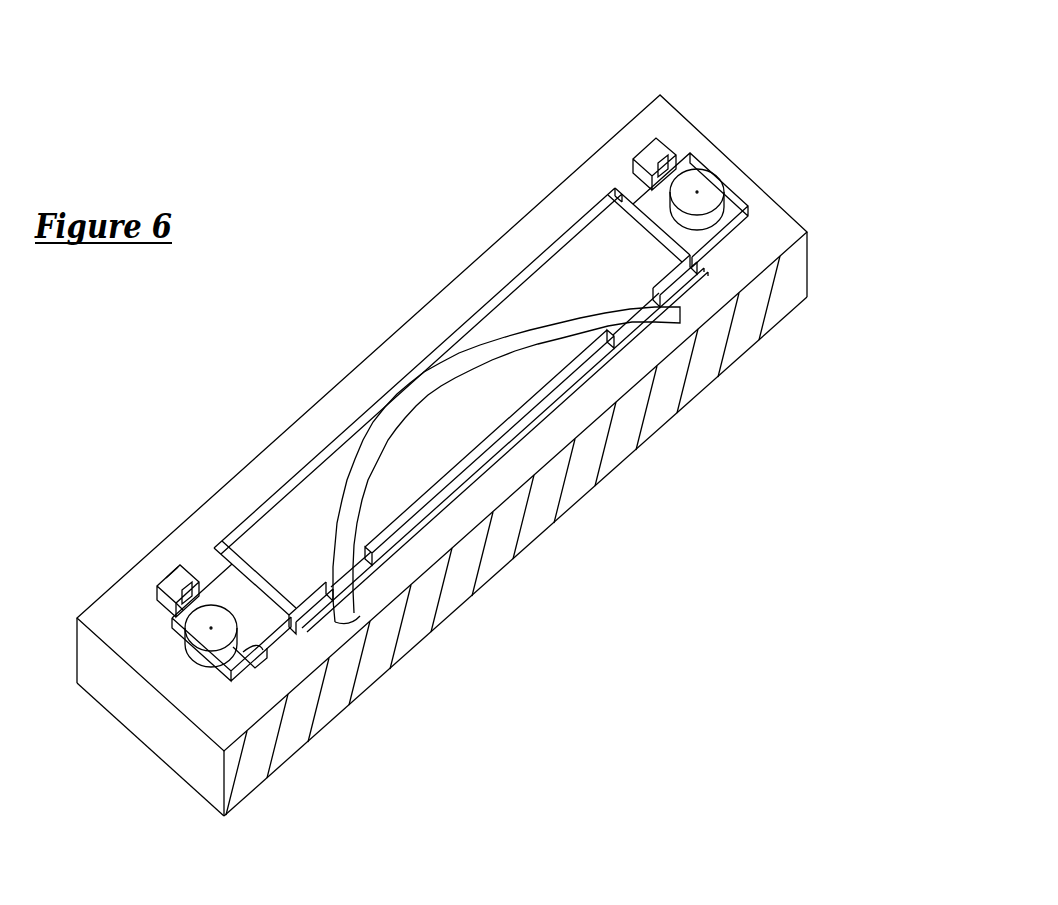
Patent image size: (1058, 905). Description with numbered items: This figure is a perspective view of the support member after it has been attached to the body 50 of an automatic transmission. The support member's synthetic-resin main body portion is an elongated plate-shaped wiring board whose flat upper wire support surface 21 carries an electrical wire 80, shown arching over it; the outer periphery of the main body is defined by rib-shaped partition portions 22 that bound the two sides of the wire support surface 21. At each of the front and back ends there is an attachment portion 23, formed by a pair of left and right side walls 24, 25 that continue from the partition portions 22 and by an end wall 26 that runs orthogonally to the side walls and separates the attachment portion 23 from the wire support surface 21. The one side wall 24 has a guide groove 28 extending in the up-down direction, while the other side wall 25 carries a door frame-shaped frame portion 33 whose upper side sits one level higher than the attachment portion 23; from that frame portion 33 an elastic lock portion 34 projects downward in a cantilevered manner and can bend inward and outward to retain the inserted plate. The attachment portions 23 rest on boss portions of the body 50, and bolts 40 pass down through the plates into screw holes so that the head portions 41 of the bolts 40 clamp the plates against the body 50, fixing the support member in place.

The wire support surface 21 is at (507, 310).
The partition portion 22 is at (323, 447).
The attachment portion 23 is at (202, 520).
The side wall 24 is at (260, 670).
The side wall 25 is at (175, 570).
The end wall 26 is at (249, 578).
The guide groove 28 is at (222, 660).
The frame portion 33 is at (185, 603).
The elastic lock portion 34 is at (170, 610).
The bolt 40 is at (185, 653).
The head portion 41 is at (207, 640).
The body 50 is at (573, 483).
The electrical wire 80 is at (430, 380).